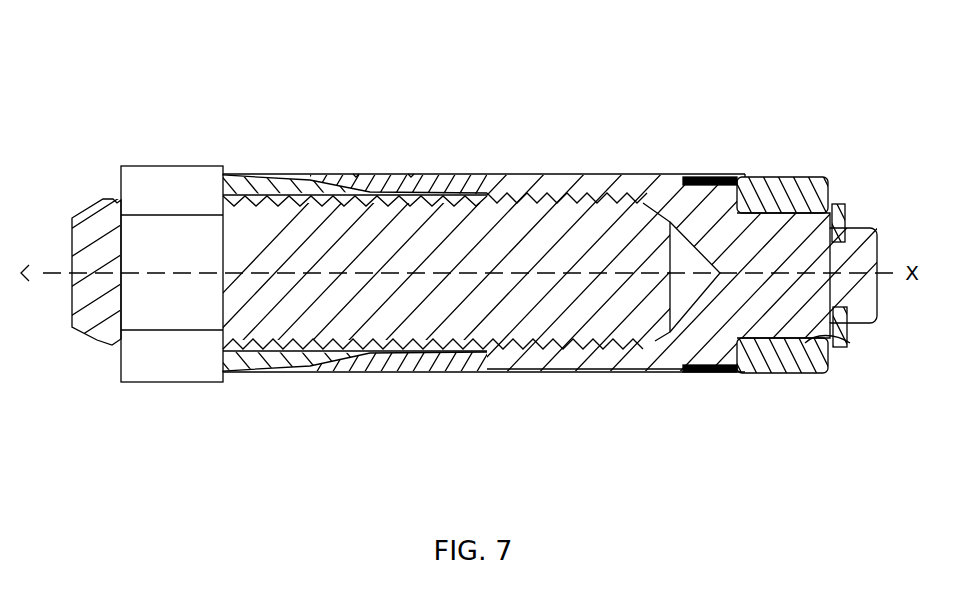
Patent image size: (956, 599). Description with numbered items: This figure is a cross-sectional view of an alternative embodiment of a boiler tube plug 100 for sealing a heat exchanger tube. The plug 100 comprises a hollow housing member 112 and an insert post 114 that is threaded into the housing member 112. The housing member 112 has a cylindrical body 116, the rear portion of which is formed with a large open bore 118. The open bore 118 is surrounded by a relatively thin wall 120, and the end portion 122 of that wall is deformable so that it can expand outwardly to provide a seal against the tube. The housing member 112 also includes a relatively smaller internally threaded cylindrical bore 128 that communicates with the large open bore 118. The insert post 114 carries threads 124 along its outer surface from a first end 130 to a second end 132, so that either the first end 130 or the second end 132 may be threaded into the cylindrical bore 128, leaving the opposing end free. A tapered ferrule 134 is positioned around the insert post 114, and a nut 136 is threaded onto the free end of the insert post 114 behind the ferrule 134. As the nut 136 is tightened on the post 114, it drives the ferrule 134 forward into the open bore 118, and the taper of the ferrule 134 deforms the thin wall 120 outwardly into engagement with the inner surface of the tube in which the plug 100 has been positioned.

The boiler tube plug 100 is at (477, 53).
The housing member 112 is at (645, 173).
The insert post 114 is at (272, 225).
The cylindrical body 116 is at (472, 368).
The open bore 118 is at (296, 176).
The thin wall 120 is at (437, 173).
The end portion 122 is at (337, 173).
The threads 124 is at (515, 178).
The internally threaded cylindrical bore 128 is at (678, 219).
The first end 130 is at (103, 198).
The second end 132 is at (657, 330).
The tapered ferrule 134 is at (263, 365).
The nut 136 is at (182, 384).